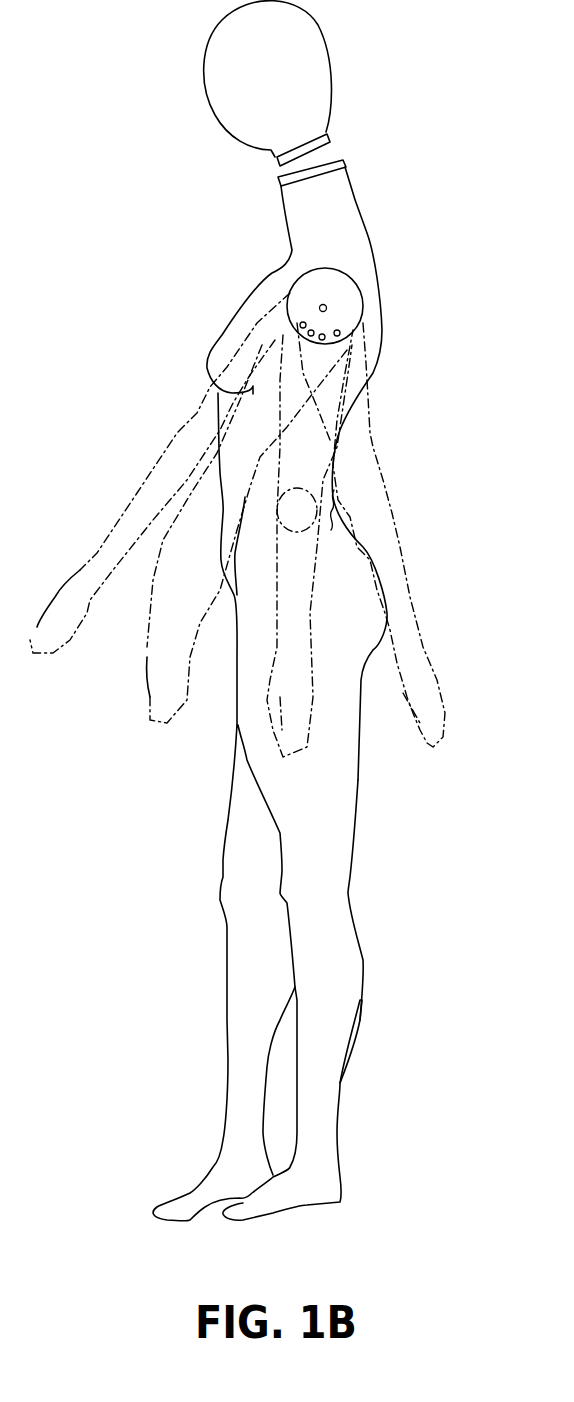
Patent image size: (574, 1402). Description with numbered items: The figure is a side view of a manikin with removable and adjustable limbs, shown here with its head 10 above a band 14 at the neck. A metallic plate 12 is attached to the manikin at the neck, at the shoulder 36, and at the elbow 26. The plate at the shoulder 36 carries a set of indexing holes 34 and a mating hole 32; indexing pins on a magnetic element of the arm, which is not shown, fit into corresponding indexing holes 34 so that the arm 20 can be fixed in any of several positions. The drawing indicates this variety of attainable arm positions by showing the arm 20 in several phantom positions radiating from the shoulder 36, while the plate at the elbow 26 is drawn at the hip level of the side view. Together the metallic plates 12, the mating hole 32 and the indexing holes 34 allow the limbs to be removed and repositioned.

The head 10 is at (305, 50).
The metallic plate 12 is at (330, 167).
The neck band 14 is at (323, 137).
The arm 20 is at (230, 413).
The elbow 26 is at (340, 505).
The mating hole 32 is at (326, 308).
The indexing holes 34 is at (340, 334).
The shoulder 36 is at (323, 263).